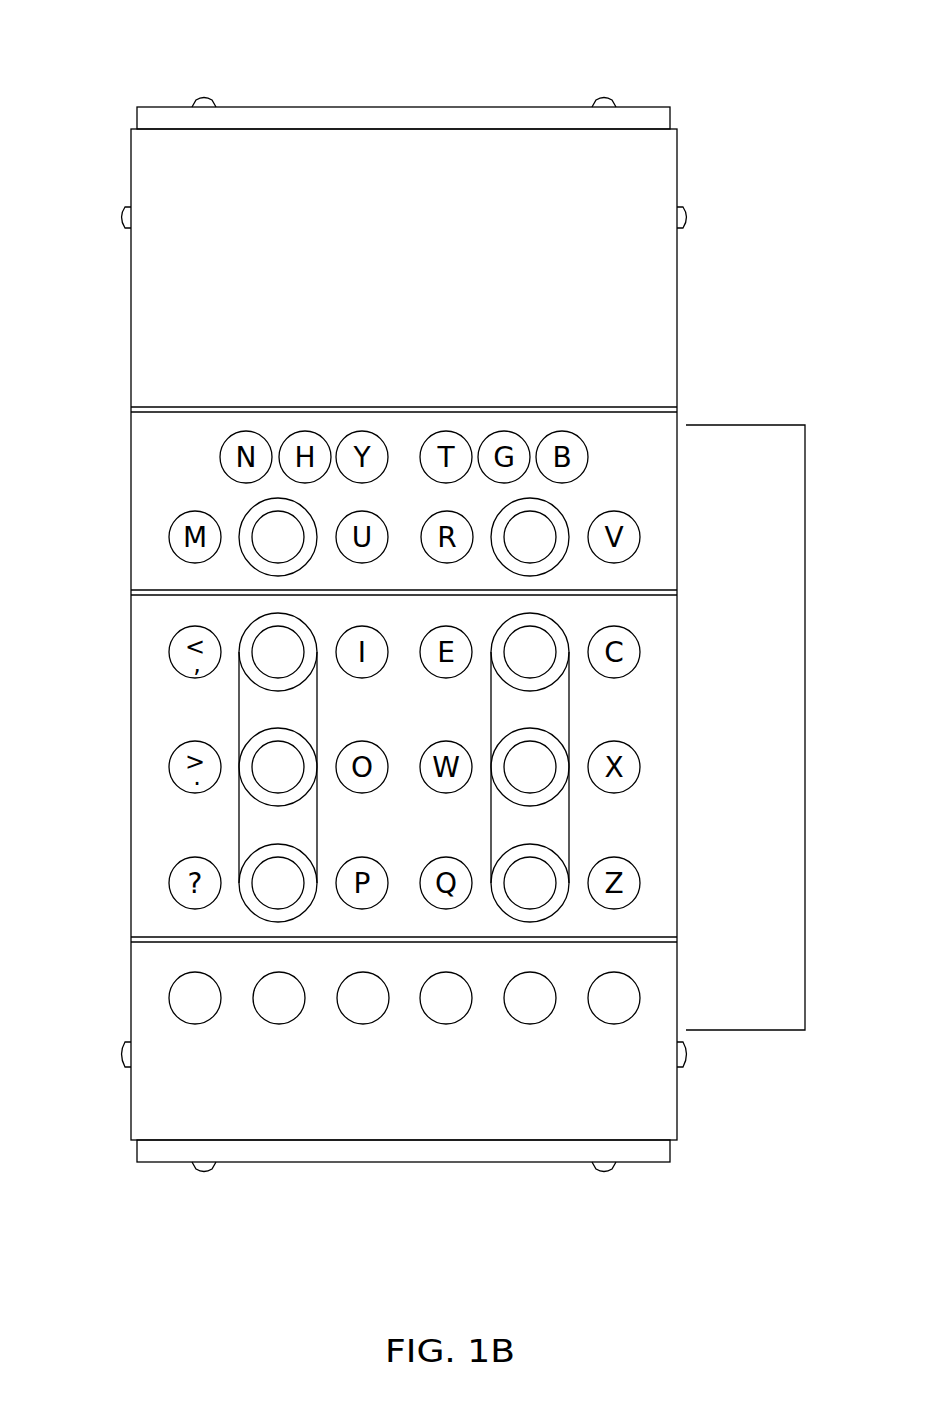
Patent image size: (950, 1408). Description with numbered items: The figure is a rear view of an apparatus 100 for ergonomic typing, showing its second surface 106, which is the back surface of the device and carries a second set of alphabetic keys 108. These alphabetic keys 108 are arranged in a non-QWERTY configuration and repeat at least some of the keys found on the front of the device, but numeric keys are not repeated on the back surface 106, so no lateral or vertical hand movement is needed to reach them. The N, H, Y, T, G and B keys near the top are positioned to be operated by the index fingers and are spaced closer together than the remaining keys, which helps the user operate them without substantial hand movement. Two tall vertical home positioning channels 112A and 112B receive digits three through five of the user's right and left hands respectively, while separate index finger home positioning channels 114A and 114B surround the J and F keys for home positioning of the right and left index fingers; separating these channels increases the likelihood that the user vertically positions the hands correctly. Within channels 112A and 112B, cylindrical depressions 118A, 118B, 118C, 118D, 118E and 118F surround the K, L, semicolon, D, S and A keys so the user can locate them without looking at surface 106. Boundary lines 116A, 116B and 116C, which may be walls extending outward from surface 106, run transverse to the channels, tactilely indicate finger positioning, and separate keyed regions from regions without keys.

The apparatus 100 is at (118, 73).
The second surface 106 is at (620, 170).
The second set of alphabetic keys 108 is at (805, 728).
The right hand digits three through five home positioning channel 112A is at (239, 817).
The left hand digits three through five home positioning channel 112B is at (569, 815).
The right hand index finger home positioning channel 114A is at (250, 513).
The left hand index finger home positioning channel 114B is at (562, 510).
The boundary line 116A is at (175, 937).
The boundary line 116B is at (175, 590).
The boundary line 116C is at (175, 407).
The cylindrical depression 118A is at (265, 685).
The cylindrical depression 118B is at (272, 731).
The cylindrical depression 118C is at (262, 848).
The cylindrical depression 118D is at (548, 687).
The cylindrical depression 118E is at (540, 728).
The cylindrical depression 118F is at (545, 845).